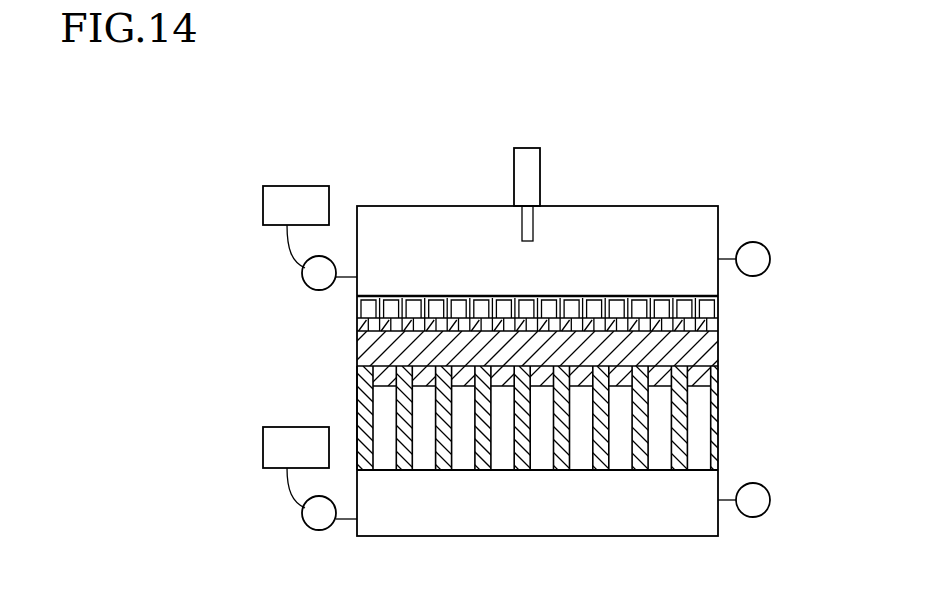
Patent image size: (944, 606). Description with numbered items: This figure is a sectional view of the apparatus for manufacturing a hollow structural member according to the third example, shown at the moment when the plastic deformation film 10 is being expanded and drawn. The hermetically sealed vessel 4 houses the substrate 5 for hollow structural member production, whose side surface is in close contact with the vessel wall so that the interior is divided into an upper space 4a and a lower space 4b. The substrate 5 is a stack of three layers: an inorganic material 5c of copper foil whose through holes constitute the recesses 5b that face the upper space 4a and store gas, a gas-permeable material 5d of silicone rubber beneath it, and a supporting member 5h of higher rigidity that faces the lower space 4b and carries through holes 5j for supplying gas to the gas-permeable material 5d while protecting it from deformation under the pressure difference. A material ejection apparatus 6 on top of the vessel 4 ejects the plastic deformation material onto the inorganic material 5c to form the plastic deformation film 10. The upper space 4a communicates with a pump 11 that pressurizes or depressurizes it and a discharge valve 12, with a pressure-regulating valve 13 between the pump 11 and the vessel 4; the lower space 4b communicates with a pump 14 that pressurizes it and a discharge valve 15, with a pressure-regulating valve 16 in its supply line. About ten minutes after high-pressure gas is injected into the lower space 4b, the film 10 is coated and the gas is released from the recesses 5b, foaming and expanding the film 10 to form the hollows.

The hermetically sealed vessel 4 is at (465, 206).
The upper space 4a is at (583, 232).
The lower space 4b is at (595, 520).
The substrate for hollow structural member production 5 is at (345, 323).
The recesses 5b is at (393, 320).
The inorganic material 5c is at (718, 322).
The gas-permeable material 5d is at (357, 348).
The supporting member 5h is at (718, 416).
The through holes 5j is at (418, 470).
The material ejection apparatus 6 is at (530, 148).
The plastic deformation film 10 is at (623, 296).
The pump 11 is at (300, 186).
The discharge valve 12 is at (770, 262).
The pressure-regulating valve 13 is at (308, 276).
The pump 14 is at (263, 460).
The discharge valve 15 is at (770, 502).
The pressure-regulating valve 16 is at (318, 527).